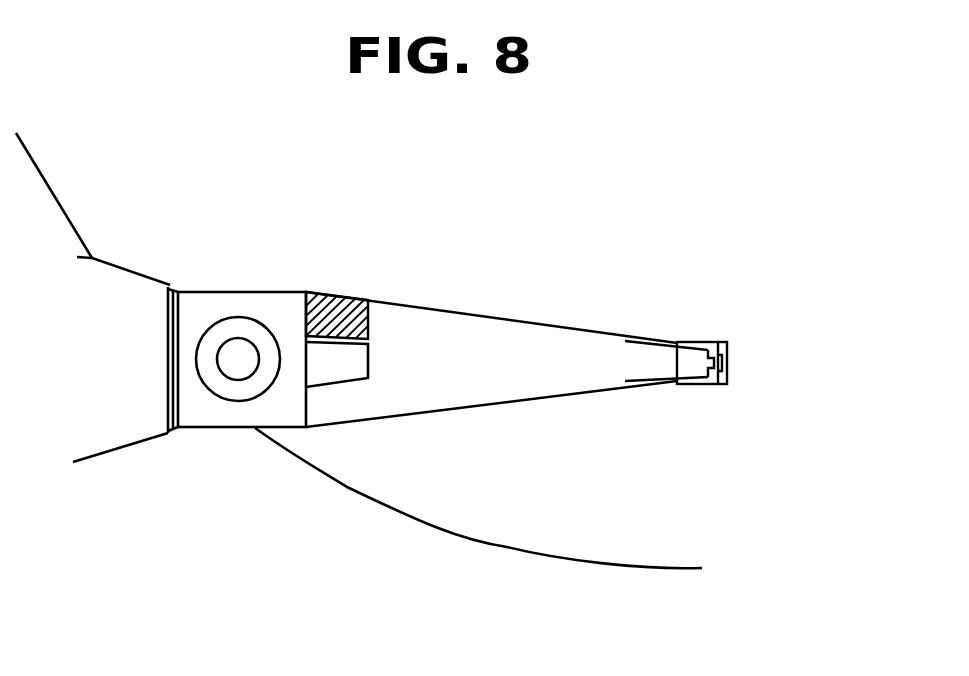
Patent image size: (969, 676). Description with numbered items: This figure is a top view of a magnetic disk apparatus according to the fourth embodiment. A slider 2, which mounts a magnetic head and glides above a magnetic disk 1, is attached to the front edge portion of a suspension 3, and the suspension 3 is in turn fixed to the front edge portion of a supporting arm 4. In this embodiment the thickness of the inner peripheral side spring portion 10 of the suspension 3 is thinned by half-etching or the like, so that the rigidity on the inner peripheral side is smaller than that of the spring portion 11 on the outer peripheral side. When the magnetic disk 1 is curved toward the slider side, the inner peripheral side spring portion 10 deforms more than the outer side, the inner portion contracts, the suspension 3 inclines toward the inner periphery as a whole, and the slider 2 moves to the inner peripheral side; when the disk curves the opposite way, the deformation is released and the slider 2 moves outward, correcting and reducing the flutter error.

The magnetic disk 1 is at (512, 527).
The slider 2 is at (728, 350).
The suspension 3 is at (507, 345).
The supporting arm 4 is at (137, 427).
The inner peripheral side spring portion 10 is at (343, 297).
The spring portion at the outer peripheral side 11 is at (340, 398).